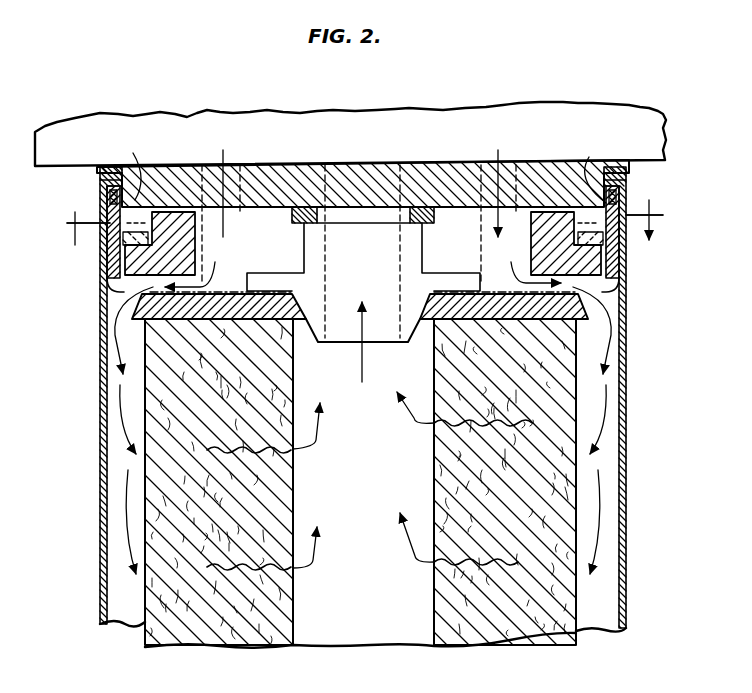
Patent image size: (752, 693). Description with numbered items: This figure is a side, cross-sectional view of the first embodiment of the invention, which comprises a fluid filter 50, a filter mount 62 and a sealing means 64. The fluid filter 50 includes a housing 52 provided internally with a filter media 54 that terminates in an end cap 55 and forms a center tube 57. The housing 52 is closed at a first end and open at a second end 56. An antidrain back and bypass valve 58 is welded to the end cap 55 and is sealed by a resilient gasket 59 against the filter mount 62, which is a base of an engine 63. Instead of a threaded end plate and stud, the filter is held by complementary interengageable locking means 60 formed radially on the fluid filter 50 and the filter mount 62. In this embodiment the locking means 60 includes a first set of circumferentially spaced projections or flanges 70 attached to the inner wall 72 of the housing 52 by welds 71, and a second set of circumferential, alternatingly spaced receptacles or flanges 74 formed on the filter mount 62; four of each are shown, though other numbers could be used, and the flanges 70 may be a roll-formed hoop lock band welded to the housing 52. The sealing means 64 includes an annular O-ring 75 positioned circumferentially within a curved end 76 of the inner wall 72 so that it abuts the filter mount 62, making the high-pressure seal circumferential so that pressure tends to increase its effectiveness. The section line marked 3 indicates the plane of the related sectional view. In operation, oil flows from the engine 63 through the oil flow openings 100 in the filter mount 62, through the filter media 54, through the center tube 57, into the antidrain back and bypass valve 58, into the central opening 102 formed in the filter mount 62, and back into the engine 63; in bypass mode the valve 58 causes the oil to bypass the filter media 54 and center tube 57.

The fluid filter 50 is at (728, 406).
The housing 52 is at (628, 545).
The filter media 54 is at (277, 510).
The end cap 55 is at (300, 342).
The second end 56 is at (624, 187).
The center tube 57 is at (403, 618).
The antidrain back and bypass valve 58 is at (378, 343).
The resilient gasket 59 is at (293, 213).
The locking means 60 is at (87, 304).
The filter mount 62 is at (167, 187).
The engine 63 is at (335, 128).
The sealing means 64 is at (98, 202).
The flanges 70 is at (110, 293).
The welds 71 is at (103, 274).
The inner wall 72 is at (101, 380).
The receptacles or flanges 74 is at (182, 250).
The O-ring 75 is at (362, 168).
The curved end 76 is at (100, 182).
The oil flow openings 100 is at (238, 157).
The central opening 102 is at (389, 158).
The section line 3- 3 is at (361, 225).